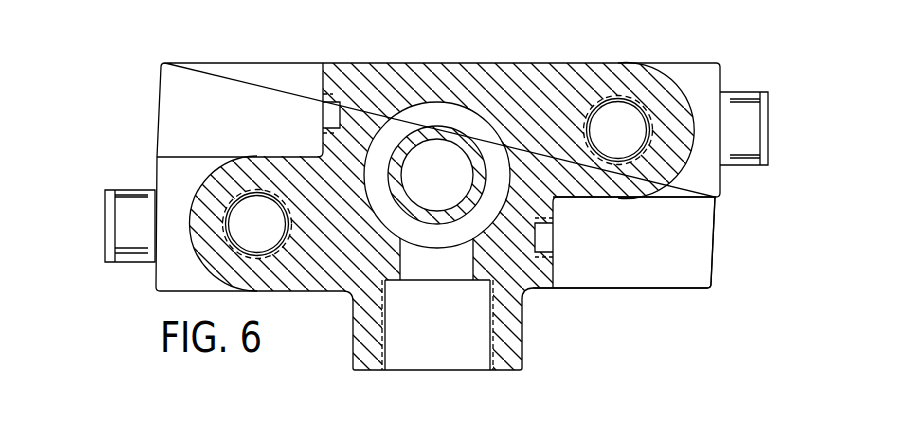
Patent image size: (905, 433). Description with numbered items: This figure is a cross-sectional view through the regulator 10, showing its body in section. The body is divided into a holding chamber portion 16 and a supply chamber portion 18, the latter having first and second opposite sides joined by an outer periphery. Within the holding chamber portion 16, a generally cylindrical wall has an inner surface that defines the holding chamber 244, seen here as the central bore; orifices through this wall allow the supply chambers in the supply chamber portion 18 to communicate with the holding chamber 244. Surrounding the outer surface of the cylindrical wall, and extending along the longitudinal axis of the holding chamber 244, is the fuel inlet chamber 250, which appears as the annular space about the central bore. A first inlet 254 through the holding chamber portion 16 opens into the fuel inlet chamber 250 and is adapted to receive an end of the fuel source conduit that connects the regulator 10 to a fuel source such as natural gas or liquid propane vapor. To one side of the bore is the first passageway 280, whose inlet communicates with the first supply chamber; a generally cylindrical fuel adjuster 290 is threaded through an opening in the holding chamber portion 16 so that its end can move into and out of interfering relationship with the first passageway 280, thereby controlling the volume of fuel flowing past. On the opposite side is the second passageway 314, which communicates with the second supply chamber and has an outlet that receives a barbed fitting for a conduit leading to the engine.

The regulator 10 is at (756, 300).
The holding chamber portion 16 is at (585, 57).
The supply chamber portion 18 is at (633, 294).
The holding chamber 244 is at (422, 165).
The fuel inlet chamber 250 is at (445, 110).
The first inlet 254 is at (385, 327).
The first passageway 280 is at (253, 198).
The fuel adjuster 290 is at (102, 243).
The second passageway 314 is at (625, 105).